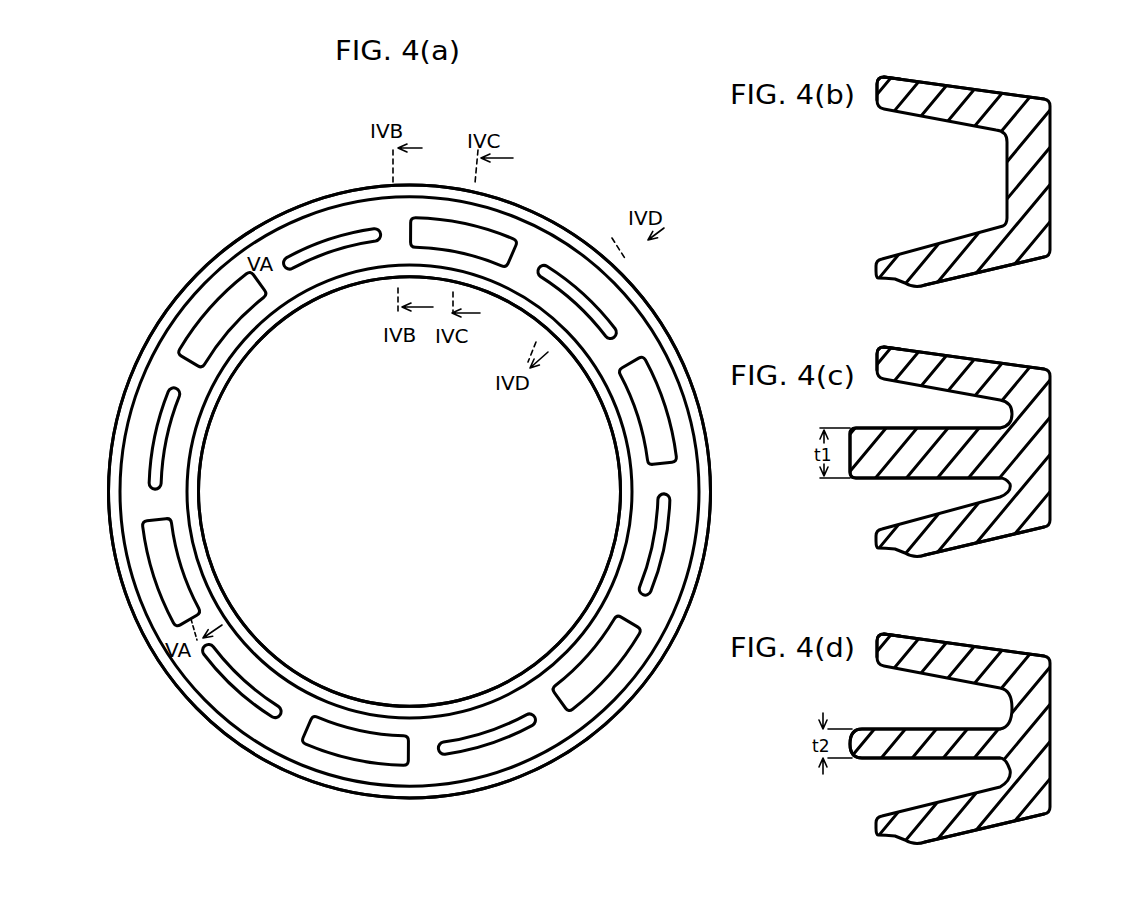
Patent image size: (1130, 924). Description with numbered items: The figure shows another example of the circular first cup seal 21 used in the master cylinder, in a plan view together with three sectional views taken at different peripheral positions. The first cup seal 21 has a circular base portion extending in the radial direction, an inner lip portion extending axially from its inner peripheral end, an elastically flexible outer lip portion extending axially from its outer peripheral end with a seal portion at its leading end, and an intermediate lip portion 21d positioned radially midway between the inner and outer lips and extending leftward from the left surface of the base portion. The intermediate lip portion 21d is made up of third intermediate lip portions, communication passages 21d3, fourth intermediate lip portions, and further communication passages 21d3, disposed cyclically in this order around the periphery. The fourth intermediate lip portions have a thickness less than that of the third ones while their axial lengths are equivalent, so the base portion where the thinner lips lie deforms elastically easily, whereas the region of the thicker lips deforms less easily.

The first cup seal 21 is at (174, 710).
The intermediate lip portion 21d is at (307, 829).
The communication passage 21d3 is at (398, 230).